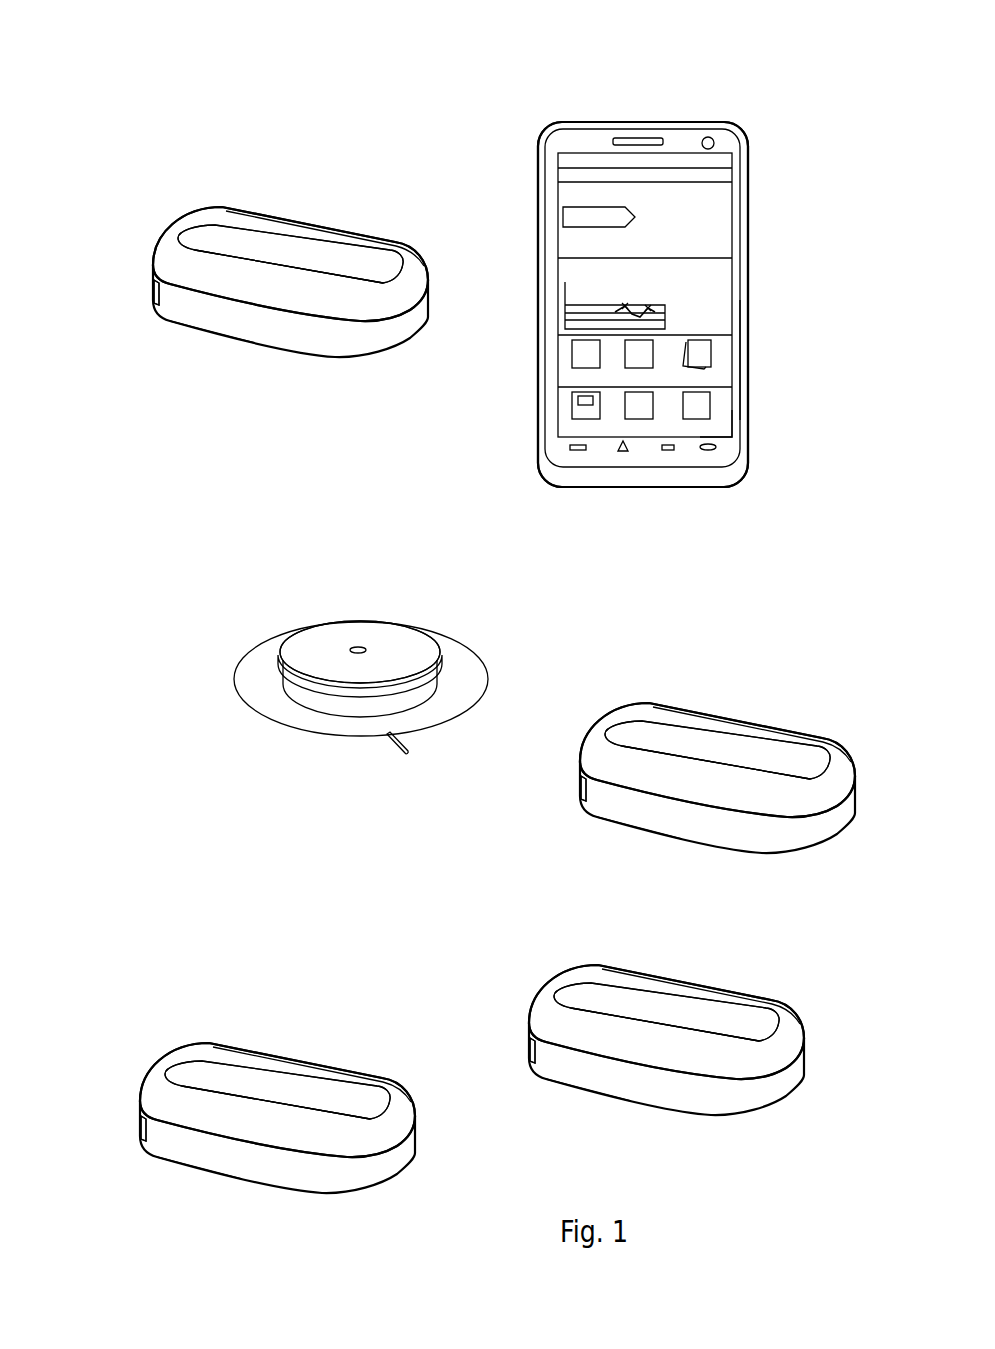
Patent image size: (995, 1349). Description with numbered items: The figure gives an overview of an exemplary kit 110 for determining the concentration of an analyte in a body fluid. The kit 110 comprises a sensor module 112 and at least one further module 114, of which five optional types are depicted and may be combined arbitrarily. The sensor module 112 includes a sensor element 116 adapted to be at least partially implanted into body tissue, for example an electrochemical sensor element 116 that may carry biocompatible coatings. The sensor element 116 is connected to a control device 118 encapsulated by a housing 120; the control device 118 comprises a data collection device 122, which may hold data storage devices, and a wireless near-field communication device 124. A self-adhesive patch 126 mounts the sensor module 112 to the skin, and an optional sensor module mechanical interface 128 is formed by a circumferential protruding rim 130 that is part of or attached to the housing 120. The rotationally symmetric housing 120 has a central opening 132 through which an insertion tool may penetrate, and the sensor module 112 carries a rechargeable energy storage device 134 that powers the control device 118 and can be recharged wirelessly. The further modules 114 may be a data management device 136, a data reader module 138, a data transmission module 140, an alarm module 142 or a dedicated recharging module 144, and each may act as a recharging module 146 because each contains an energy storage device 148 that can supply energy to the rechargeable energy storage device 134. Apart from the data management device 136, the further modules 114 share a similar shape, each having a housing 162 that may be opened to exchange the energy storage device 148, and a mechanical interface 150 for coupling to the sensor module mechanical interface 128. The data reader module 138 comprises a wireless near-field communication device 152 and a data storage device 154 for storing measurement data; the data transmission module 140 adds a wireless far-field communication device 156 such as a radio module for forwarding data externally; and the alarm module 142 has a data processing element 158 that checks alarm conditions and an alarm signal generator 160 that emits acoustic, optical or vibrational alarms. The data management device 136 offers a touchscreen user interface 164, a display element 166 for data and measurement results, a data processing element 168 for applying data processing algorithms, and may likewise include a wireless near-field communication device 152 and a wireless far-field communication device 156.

The kit 110 is at (132, 572).
The sensor module 112 is at (360, 627).
The further module 114 is at (313, 182).
The sensor element 116 is at (395, 745).
The control device 118 is at (393, 643).
The housing 120 is at (308, 697).
The data collection device 122 is at (325, 648).
The wireless near-field communication device 124 is at (314, 620).
The self-adhesive patch 126 is at (252, 670).
The sensor module mechanical interface 128 is at (428, 686).
The circumferential protruding rim 130 is at (405, 708).
The central opening 132 is at (358, 647).
The rechargeable energy storage device 134 is at (314, 620).
The data management device 136 is at (760, 135).
The data reader module 138 is at (373, 213).
The data transmission module 140 is at (790, 695).
The alarm module 142 is at (525, 998).
The dedicated recharging module 144 is at (175, 1045).
The recharging module 146 is at (468, 616).
The energy storage device 148 is at (255, 285).
The mechanical interface 150 is at (148, 293).
The wireless near-field communication device 152 is at (518, 624).
The data storage device 154 is at (258, 240).
The wireless far-field communication device 156 is at (690, 740).
The data processing element 158 is at (700, 1010).
The alarm signal generator 160 is at (712, 984).
The housing 162 is at (290, 333).
The user interface 164 is at (712, 238).
The display element 166 is at (709, 224).
The data processing element 168 is at (725, 358).